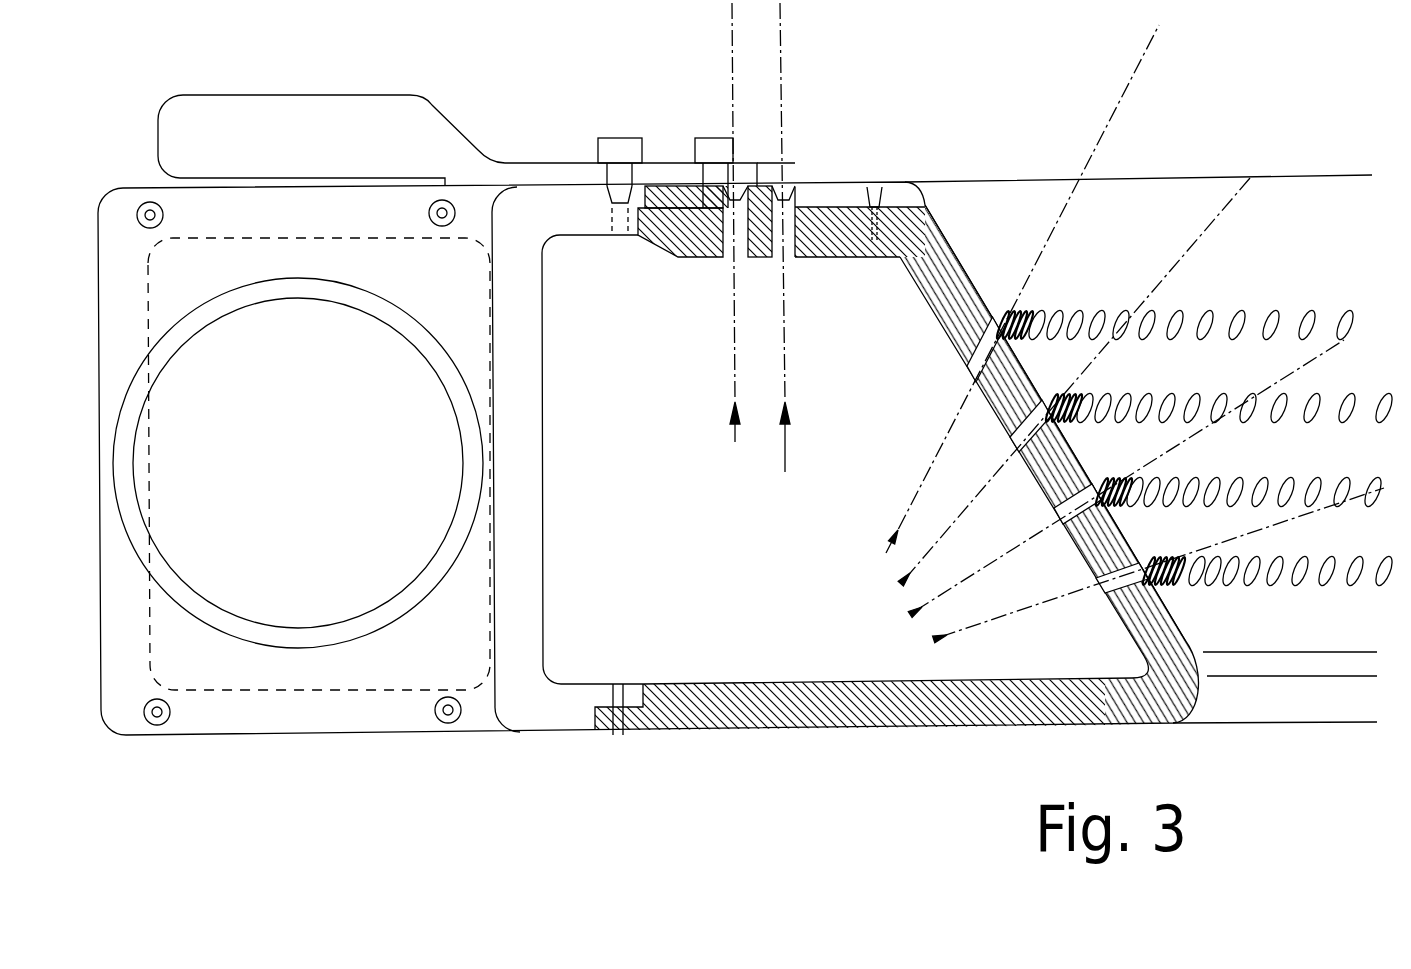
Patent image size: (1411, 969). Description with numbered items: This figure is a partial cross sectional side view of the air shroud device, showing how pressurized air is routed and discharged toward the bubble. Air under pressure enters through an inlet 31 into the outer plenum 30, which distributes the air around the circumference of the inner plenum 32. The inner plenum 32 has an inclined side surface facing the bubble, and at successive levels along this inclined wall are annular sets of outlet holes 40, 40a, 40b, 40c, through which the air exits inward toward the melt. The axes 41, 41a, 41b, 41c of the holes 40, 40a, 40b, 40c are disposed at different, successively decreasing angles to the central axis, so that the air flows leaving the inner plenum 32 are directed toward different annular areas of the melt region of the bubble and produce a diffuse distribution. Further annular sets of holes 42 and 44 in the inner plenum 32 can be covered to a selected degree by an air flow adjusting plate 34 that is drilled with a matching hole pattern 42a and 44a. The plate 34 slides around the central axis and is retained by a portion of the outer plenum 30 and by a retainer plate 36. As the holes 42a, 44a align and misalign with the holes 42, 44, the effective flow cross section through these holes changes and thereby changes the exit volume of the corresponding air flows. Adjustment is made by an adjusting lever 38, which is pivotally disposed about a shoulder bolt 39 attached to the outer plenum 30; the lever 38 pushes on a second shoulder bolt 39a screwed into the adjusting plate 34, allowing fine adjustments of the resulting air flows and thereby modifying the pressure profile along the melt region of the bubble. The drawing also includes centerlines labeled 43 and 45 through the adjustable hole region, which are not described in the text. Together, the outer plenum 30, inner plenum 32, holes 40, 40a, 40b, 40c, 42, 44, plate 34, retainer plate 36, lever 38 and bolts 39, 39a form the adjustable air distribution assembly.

The outer plenum 30 is at (333, 733).
The inlet 31 is at (218, 603).
The inner plenum 32 is at (877, 728).
The air flow adjusting plate 34 is at (818, 185).
The retainer plate 36 is at (906, 182).
The adjusting lever 38 is at (289, 115).
The shoulder bolt 39 is at (618, 148).
The shoulder bolt 39a is at (705, 143).
The hole 40 is at (1101, 585).
The hole 40a is at (1058, 516).
The hole 40b is at (1015, 445).
The hole 40c is at (971, 374).
The axis 41 is at (937, 637).
The axis 41a is at (912, 612).
The axis 41b is at (903, 580).
The axis 41c is at (893, 547).
The hole 42 is at (770, 260).
The matching hole 42a is at (785, 192).
The passage axis 43 is at (785, 472).
The hole 44 is at (722, 260).
The matching hole 44a is at (738, 192).
The passage axis 45 is at (735, 442).